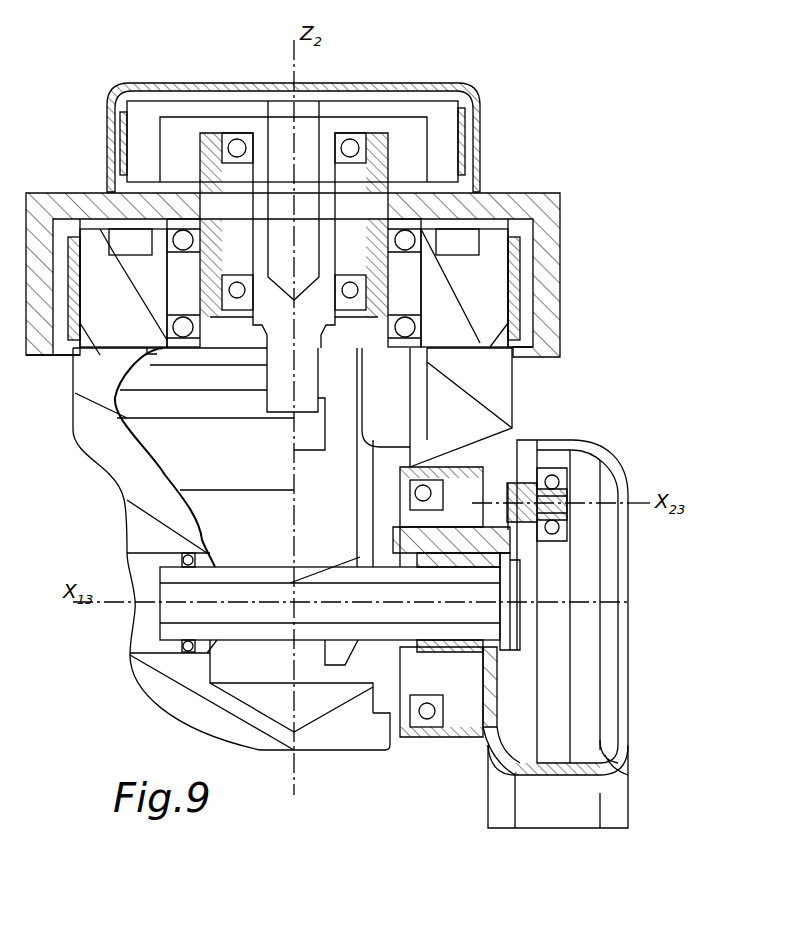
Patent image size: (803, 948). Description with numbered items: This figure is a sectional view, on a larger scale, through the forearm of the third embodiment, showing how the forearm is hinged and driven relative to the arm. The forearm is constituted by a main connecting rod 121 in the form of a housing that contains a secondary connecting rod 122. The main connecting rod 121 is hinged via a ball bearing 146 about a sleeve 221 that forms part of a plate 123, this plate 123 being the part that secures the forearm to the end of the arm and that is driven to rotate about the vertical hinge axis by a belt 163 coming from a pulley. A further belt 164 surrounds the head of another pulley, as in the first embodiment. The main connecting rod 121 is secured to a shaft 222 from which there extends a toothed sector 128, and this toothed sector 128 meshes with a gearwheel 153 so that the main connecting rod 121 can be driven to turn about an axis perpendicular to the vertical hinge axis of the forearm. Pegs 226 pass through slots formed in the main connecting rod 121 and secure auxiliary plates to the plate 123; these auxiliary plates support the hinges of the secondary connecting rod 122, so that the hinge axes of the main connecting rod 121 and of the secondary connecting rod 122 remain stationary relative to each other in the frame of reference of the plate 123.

The belt 164 is at (468, 137).
The belt 163 is at (513, 280).
The toothed sector 128 is at (320, 374).
The main connecting rod 121 is at (550, 443).
The secondary connecting rod 122 is at (556, 528).
The pegs 226 is at (485, 522).
The gearwheel 153 is at (278, 400).
The shaft 222 is at (177, 632).
The plate 123 is at (173, 703).
The sleeve 221 is at (423, 670).
The ball bearing 146 is at (427, 720).